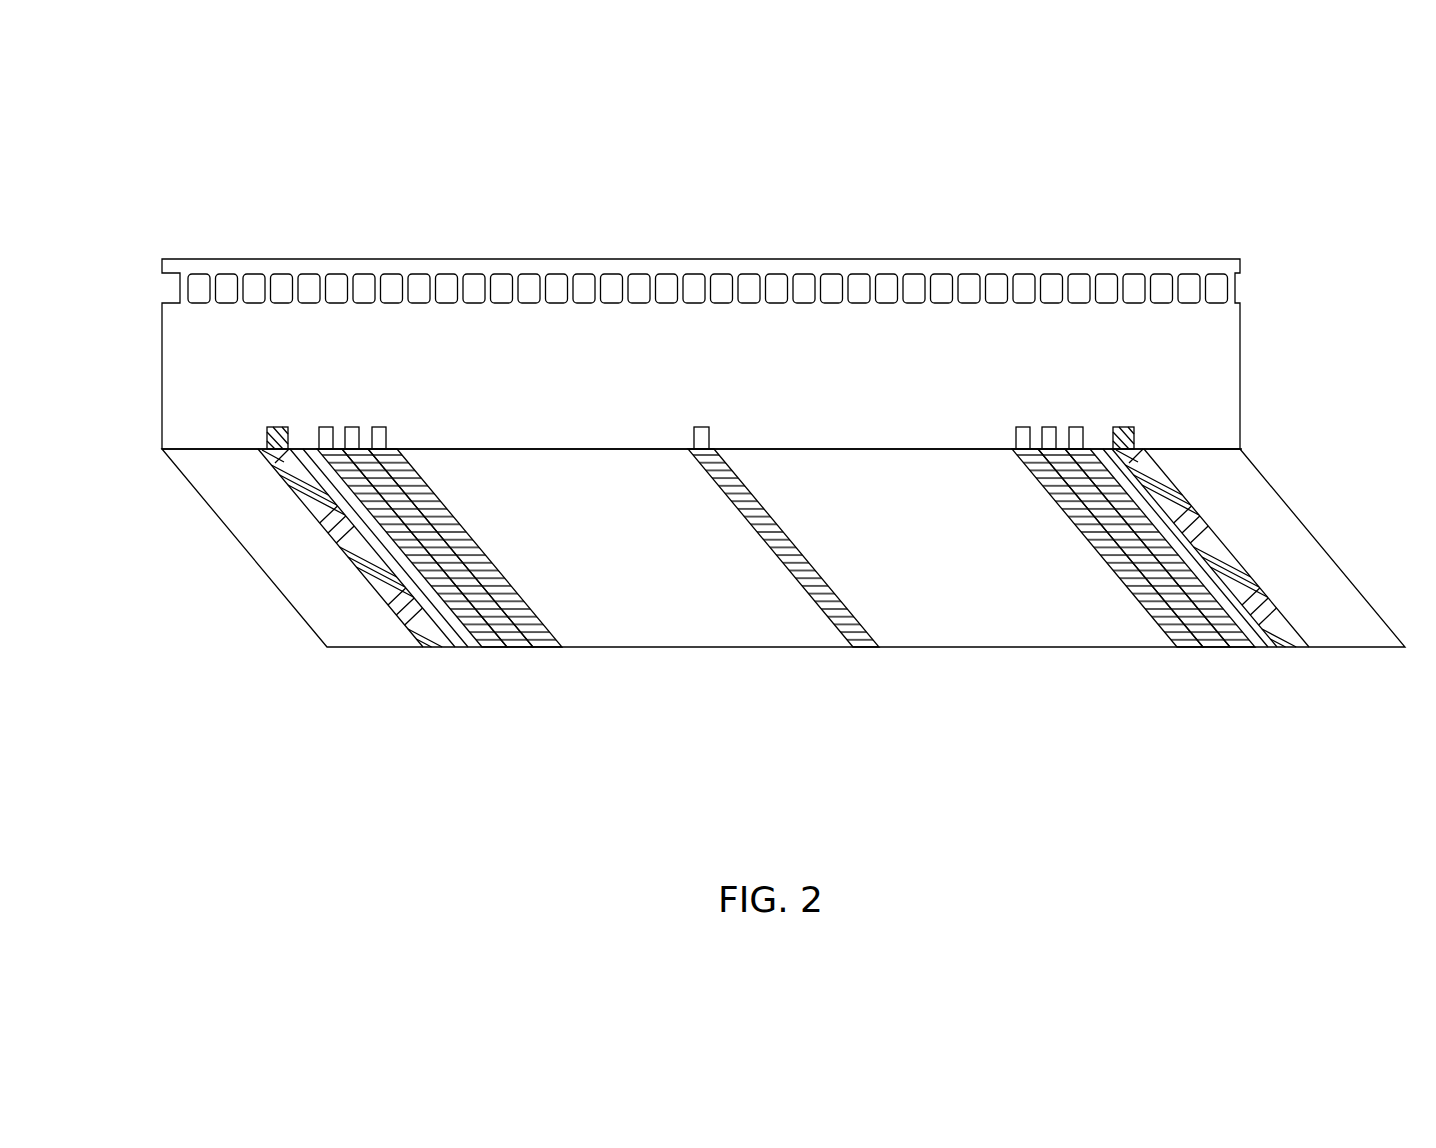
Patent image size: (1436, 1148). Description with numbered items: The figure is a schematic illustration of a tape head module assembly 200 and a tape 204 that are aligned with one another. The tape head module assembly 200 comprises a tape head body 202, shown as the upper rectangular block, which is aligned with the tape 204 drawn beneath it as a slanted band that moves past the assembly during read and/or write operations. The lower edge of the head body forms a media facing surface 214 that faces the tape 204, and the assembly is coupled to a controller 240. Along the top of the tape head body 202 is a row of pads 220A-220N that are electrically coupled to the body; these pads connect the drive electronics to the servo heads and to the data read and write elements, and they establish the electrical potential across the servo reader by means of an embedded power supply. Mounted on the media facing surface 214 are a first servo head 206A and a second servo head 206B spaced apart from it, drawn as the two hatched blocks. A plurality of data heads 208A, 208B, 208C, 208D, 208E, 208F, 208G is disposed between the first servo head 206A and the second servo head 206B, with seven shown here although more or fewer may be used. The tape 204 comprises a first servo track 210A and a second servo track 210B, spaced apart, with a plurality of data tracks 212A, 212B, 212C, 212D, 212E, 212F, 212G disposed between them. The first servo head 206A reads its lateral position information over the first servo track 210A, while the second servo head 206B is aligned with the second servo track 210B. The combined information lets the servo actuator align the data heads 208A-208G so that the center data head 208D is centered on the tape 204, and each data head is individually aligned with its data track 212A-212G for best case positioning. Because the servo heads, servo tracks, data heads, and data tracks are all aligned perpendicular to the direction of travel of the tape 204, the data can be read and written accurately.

The tape head module assembly 200 is at (268, 108).
The tape head body 202 is at (1242, 342).
The tape 204 is at (1324, 552).
The first servo head 206A is at (278, 427).
The second servo head 206B is at (1123, 427).
The data head 208A is at (325, 427).
The data head 208B is at (352, 427).
The data head 208C is at (379, 427).
The data head 208D is at (701, 427).
The data head 208E is at (1023, 427).
The data head 208F is at (1049, 427).
The data head 208G is at (1076, 427).
The first servo track 210A is at (447, 650).
The second servo track 210B is at (1290, 650).
The data track 212A is at (493, 649).
The data track 212B is at (518, 649).
The data track 212C is at (545, 649).
The data track 212D is at (868, 650).
The data track 212E is at (1180, 649).
The data track 212F is at (1205, 649).
The data track 212G is at (1232, 649).
The media facing surface 214 is at (1192, 449).
The pad 220A is at (258, 273).
The pad 220N is at (1163, 273).
The controller 240 is at (1241, 449).